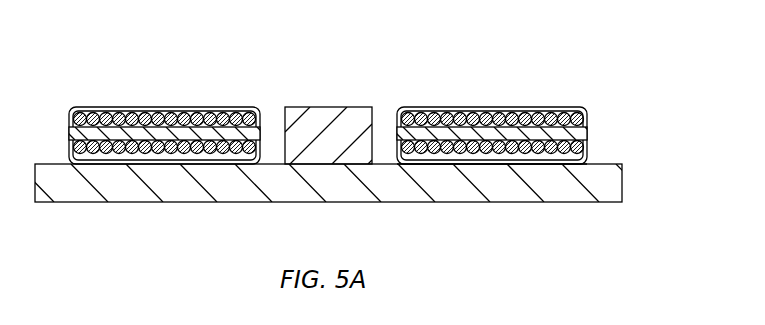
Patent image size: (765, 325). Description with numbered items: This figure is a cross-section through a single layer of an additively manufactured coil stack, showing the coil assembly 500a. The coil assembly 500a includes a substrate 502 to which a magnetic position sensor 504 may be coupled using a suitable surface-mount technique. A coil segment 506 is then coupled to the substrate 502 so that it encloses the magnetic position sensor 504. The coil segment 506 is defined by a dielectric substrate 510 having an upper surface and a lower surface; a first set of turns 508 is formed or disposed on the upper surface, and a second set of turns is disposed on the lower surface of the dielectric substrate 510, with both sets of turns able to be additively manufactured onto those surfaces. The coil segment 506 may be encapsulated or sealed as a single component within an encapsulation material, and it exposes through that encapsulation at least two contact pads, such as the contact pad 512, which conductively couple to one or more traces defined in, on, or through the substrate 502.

The coil assembly 500a is at (57, 46).
The substrate 502 is at (622, 177).
The magnetic position sensor 504 is at (325, 107).
The coil segment 506 is at (519, 146).
The first set of turns 508 is at (530, 107).
The dielectric substrate 510 is at (587, 132).
The contact pad 512 is at (505, 165).